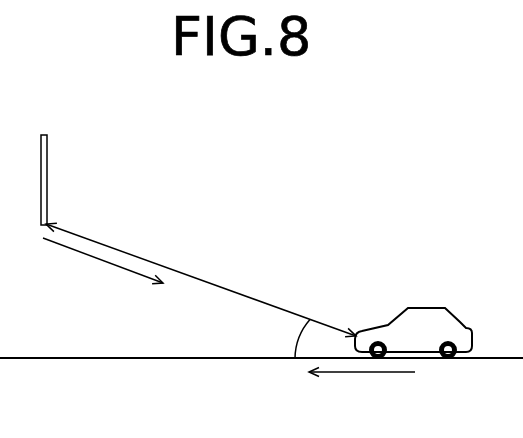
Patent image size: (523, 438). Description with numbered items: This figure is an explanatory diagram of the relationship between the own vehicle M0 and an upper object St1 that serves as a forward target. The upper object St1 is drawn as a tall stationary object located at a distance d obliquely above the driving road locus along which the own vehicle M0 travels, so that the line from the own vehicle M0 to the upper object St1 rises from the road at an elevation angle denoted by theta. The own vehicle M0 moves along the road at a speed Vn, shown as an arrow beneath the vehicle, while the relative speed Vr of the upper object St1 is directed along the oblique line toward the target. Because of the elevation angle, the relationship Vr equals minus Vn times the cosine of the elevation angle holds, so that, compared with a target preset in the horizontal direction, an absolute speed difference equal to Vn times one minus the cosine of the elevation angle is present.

The upper object St1 is at (47, 135).
The own vehicle M0 is at (429, 309).
The distance d is at (201, 279).
The relative speed Vr is at (103, 265).
The speed of the own vehicle Vn is at (362, 388).